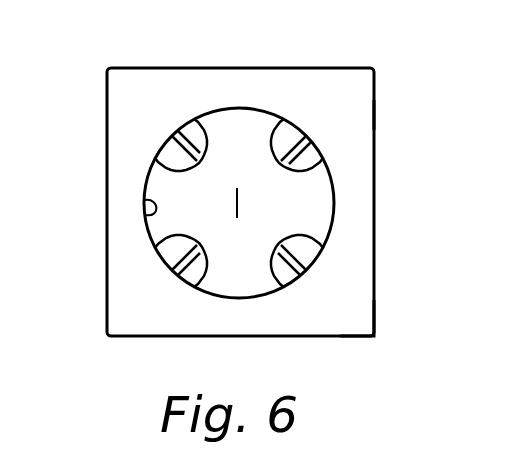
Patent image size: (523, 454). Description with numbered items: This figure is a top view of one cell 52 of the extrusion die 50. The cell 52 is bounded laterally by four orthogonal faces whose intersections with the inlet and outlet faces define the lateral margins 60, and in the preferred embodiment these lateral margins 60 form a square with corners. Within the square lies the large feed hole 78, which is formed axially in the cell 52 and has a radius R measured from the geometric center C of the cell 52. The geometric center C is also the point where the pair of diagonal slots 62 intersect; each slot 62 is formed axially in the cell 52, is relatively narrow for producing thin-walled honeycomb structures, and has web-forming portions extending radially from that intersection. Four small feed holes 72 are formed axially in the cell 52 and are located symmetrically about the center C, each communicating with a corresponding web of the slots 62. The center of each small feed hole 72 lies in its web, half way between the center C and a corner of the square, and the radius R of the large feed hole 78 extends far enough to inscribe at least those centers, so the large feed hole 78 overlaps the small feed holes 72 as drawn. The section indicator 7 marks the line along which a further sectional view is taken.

The die 50 is at (386, 117).
The cell 52 is at (375, 162).
The lateral margins 60 is at (368, 315).
The slots 62 is at (268, 294).
The small feed holes 72 is at (278, 253).
The large feed hole 78 is at (145, 206).
The section line 7- 7 is at (378, 5).
The radius R is at (328, 202).
The geometric center C is at (233, 203).